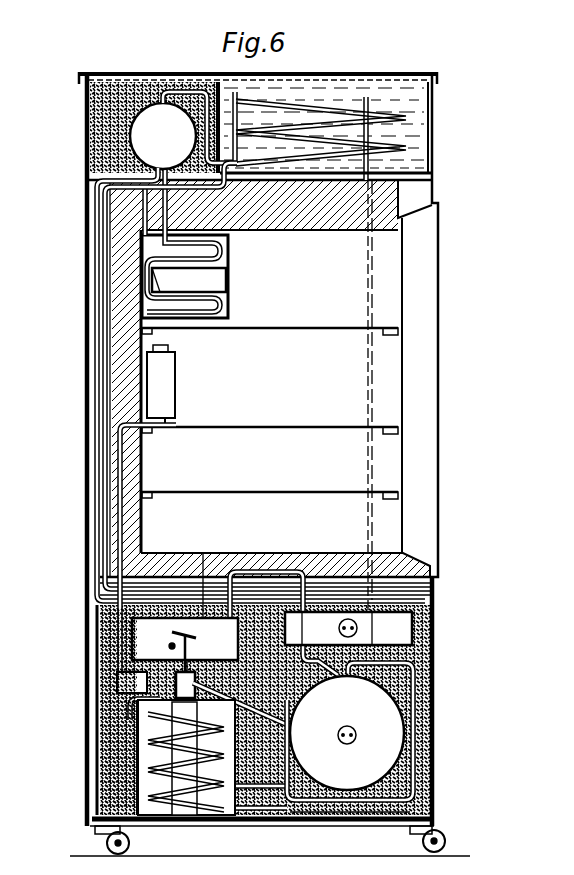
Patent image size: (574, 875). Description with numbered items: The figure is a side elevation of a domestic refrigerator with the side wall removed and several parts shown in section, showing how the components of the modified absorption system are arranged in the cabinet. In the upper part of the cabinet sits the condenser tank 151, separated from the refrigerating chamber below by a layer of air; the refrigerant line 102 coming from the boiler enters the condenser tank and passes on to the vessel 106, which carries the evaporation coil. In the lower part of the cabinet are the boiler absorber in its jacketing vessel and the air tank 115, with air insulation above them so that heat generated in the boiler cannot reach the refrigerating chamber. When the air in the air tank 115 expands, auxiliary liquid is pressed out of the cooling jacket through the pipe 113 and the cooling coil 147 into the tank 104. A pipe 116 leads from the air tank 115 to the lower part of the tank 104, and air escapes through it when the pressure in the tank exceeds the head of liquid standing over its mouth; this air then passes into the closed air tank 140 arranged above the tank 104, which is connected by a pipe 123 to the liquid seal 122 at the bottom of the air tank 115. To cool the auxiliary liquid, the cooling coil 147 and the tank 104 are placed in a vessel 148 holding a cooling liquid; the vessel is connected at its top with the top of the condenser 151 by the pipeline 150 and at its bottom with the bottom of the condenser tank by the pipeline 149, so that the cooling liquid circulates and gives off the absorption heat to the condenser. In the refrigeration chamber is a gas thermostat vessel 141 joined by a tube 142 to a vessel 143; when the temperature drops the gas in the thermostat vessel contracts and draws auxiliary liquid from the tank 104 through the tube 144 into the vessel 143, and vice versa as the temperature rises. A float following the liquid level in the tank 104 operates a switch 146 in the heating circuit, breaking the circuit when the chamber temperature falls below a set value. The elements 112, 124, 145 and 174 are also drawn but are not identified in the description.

The refrigerant line 102 is at (430, 173).
The tank 104 is at (195, 812).
The vessel 106 is at (152, 118).
The cabinet wall 112 is at (433, 786).
The pipe 113 is at (316, 815).
The air tank 115 is at (425, 617).
The pipe 116 is at (238, 815).
The liquid seal 122 is at (333, 628).
The pipe 123 is at (268, 572).
The compressor 124 is at (335, 674).
The closed air tank 140 is at (203, 560).
The gas thermostat vessel 141 is at (173, 387).
The tube 142 is at (113, 480).
The vessel 143 is at (117, 683).
The tube 144 is at (130, 702).
The solenoid 145 is at (192, 666).
The switch 146 is at (185, 659).
The cooling coil 147 is at (186, 772).
The vessel 148 is at (108, 755).
The pipeline 149 is at (100, 404).
The pipeline 150 is at (107, 378).
The condenser tank 151 is at (422, 122).
The tube 174 is at (390, 733).